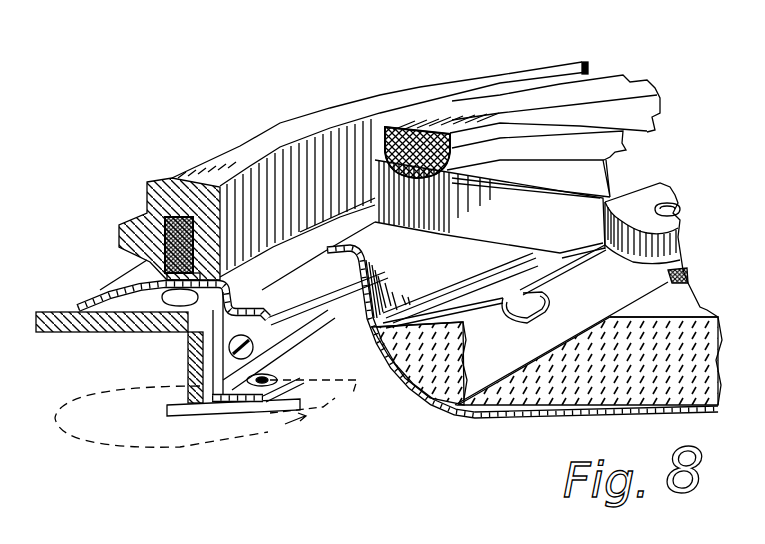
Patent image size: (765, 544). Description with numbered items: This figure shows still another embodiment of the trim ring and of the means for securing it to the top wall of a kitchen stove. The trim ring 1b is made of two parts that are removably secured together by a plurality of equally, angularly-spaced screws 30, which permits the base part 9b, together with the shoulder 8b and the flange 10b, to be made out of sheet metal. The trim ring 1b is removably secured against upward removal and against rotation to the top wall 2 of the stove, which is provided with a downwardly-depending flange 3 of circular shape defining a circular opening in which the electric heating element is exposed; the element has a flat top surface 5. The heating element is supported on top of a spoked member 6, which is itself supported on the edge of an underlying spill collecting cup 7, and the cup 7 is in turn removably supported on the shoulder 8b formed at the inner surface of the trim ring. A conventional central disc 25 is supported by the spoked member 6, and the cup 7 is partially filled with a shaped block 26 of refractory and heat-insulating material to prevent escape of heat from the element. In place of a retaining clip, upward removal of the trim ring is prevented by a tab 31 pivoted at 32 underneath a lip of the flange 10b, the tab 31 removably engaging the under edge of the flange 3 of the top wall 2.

The trim ring 1b is at (221, 152).
The top wall 2 is at (63, 332).
The flange 3 is at (190, 369).
The flat top surface 5 is at (607, 90).
The spoked member 6 is at (557, 227).
The spill collecting cup 7 is at (458, 419).
The shoulder 8b is at (253, 307).
The base part 9b is at (133, 304).
The flange 10b is at (222, 405).
The central disc 25 is at (667, 213).
The shaped block 26 is at (640, 354).
The screws 30 is at (147, 210).
The tab 31 is at (200, 414).
The pivot 32 is at (280, 372).